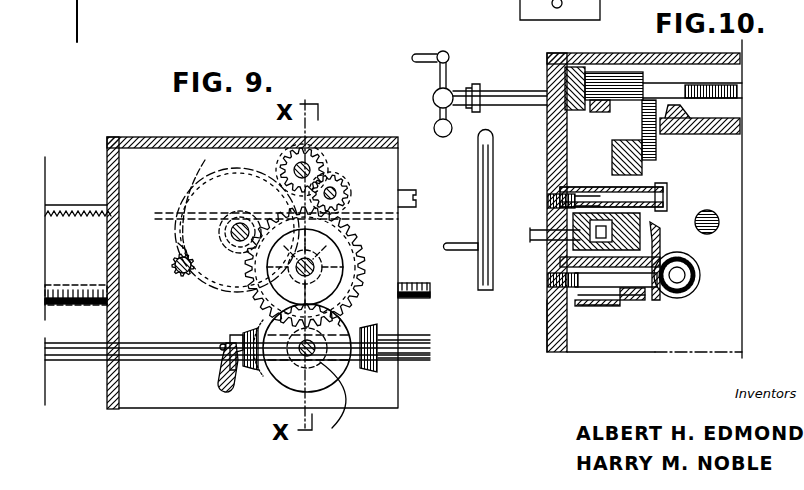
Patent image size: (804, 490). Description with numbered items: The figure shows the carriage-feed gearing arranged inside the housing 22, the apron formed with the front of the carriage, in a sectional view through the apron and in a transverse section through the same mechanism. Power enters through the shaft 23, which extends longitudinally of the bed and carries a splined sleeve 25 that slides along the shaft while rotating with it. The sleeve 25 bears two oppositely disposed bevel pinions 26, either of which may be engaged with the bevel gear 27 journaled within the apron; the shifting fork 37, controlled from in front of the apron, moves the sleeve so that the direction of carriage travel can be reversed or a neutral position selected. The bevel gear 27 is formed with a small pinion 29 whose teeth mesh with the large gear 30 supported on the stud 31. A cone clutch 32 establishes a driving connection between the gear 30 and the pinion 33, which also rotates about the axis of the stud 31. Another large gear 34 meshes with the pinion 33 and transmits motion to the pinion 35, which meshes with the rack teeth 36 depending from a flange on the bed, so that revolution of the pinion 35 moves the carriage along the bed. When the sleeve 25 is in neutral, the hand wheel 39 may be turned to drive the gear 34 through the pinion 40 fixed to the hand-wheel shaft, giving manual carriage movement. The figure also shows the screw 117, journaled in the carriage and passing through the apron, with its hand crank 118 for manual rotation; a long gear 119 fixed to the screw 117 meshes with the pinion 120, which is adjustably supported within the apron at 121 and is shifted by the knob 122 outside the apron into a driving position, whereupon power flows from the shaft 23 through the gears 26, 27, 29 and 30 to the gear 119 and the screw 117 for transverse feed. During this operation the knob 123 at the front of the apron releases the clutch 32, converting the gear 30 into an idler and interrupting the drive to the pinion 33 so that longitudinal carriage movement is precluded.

In FIG. 9, the housing 22 is at (107, 262).
In FIG. 10, the housing 22 is at (547, 330).
In FIG. 9, the shaft 23 is at (101, 362).
In FIG. 9, the sleeve 25 is at (378, 360).
In FIG. 10, the sleeve 25 is at (700, 270).
In FIG. 9, the bevel pinions 26 is at (245, 332).
In FIG. 10, the bevel pinions 26 is at (700, 300).
In FIG. 9, the bevel gear 27 is at (280, 390).
In FIG. 10, the bevel gear 27 is at (660, 330).
In FIG. 9, the small pinion 29 is at (338, 398).
In FIG. 10, the small pinion 29 is at (626, 318).
In FIG. 9, the large gear 30 is at (363, 262).
In FIG. 10, the large gear 30 is at (662, 246).
In FIG. 9, the stud 31 is at (318, 272).
In FIG. 10, the stud 31 is at (667, 188).
In FIG. 10, the cone clutch 32 is at (547, 195).
In FIG. 9, the pinion 33 is at (312, 267).
In FIG. 10, the pinion 33 is at (655, 222).
In FIG. 9, the large gear 34 is at (178, 243).
In FIG. 10, the large gear 34 is at (656, 165).
In FIG. 9, the pinion 35 is at (276, 230).
In FIG. 10, the pinion 35 is at (720, 125).
In FIG. 9, the rack teeth 36 is at (88, 213).
In FIG. 9, the shifting fork 37 is at (218, 372).
In FIG. 10, the hand wheel 39 is at (478, 278).
In FIG. 9, the pinion 40 is at (182, 278).
In FIG. 10, the screw 117 is at (737, 92).
In FIG. 10, the hand crank 118 is at (432, 90).
In FIG. 10, the long gear 119 is at (605, 72).
In FIG. 10, the pinion 120 is at (575, 95).
In FIG. 10, the adjustable support 121 is at (505, 210).
In FIG. 10, the knob 122 is at (500, 115).
In FIG. 10, the knob 123 is at (545, 262).